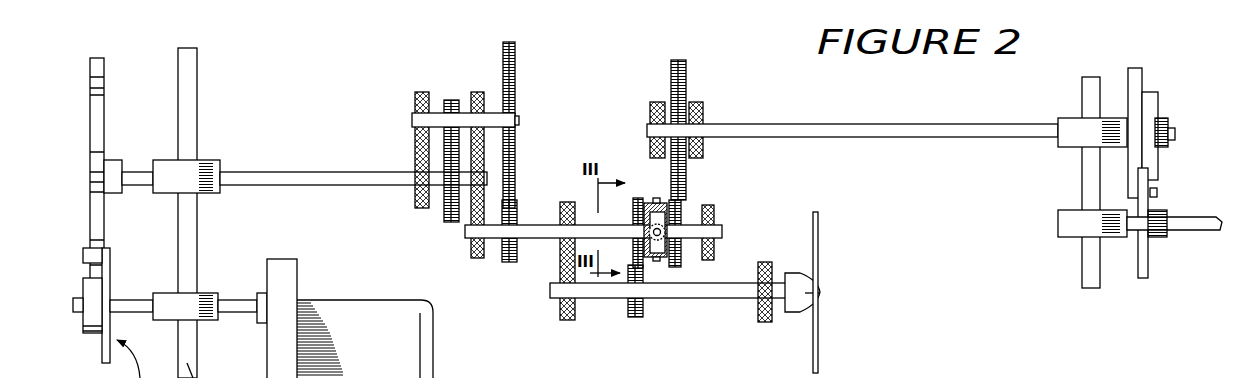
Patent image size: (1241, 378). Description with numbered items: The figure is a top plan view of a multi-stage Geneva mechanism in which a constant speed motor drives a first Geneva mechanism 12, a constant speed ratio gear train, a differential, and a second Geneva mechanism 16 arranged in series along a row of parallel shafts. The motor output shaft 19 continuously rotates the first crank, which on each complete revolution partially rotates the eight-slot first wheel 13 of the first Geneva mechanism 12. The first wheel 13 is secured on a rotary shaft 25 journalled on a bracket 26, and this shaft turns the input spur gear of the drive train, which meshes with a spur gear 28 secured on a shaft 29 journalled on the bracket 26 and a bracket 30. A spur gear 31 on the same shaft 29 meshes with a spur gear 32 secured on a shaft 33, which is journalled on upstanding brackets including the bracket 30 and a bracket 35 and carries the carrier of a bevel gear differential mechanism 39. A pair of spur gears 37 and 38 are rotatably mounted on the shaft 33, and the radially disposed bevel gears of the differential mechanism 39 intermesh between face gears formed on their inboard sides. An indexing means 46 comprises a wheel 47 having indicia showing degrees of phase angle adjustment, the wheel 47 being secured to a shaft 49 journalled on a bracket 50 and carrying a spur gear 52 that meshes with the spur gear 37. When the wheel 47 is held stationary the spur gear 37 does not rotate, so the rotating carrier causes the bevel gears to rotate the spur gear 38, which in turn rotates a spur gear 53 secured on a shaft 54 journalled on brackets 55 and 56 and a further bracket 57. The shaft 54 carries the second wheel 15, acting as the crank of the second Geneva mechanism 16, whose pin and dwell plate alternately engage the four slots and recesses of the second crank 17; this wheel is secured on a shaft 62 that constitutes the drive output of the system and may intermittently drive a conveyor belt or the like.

The first Geneva mechanism 12 is at (80, 345).
The first wheel 13 is at (82, 108).
The second wheel 15 is at (1145, 80).
The second Geneva mechanism 16 is at (1170, 102).
The second crank 17 is at (1153, 253).
The output shaft 19 is at (238, 308).
The rotary shaft 25 is at (333, 175).
The bracket 26 is at (417, 96).
The spur gear 28 is at (450, 100).
The shaft 29 is at (416, 118).
The bracket 30 is at (477, 92).
The spur gear 31 is at (514, 87).
The spur gear 32 is at (508, 258).
The shaft 33 is at (535, 228).
The bracket 35 is at (715, 212).
The spur gear 37 is at (638, 197).
The spur gear 38 is at (682, 208).
The bevel gear differential mechanism 39 is at (655, 266).
The indexing means 46 is at (747, 337).
The wheel 47 is at (822, 330).
The shaft 49 is at (728, 294).
The bracket 50 is at (770, 318).
The spur gear 52 is at (630, 300).
The spur gear 53 is at (690, 75).
The shaft 54 is at (880, 130).
The bracket 55 is at (655, 102).
The bracket 56 is at (703, 106).
The bracket 57 is at (1093, 268).
The shaft 62 is at (1187, 222).